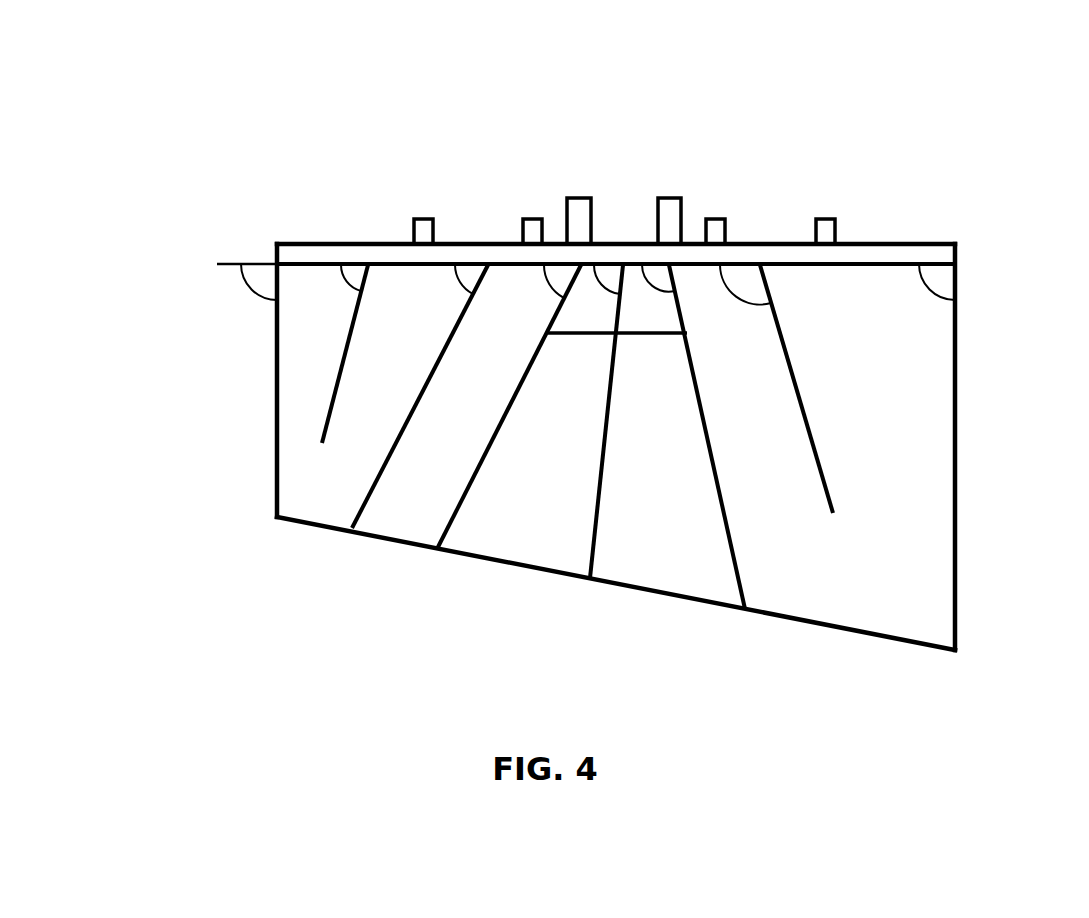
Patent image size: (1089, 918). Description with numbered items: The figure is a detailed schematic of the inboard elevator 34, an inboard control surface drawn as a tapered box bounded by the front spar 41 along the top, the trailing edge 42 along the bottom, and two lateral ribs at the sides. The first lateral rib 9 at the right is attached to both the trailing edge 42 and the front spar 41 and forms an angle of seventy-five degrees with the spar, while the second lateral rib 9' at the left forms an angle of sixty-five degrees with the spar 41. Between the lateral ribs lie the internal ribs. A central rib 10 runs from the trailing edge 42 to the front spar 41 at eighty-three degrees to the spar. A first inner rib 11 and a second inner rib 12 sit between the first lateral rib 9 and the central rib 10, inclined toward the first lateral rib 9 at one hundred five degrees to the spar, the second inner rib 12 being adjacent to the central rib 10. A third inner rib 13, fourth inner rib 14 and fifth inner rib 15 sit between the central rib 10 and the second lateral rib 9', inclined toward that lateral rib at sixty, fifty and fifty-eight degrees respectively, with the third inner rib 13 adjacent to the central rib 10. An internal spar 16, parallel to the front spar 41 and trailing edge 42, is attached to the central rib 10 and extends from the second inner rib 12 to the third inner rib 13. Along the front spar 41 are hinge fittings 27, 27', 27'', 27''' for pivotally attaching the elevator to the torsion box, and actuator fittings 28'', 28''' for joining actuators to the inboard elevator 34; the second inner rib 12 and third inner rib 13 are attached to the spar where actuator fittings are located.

The inboard elevator 34 is at (220, 201).
The first lateral rib 9 is at (997, 447).
The second lateral rib 9' is at (182, 380).
The front spar 41 is at (392, 264).
The trailing edge 42 is at (847, 638).
The fifth inner rib 15 is at (343, 383).
The fourth inner rib 14 is at (392, 450).
The third inner rib 13 is at (453, 513).
The internal spar 16 is at (600, 333).
The central rib 10 is at (597, 525).
The second inner rib 12 is at (733, 562).
The first inner rib 11 is at (825, 470).
The hinge fitting 27 is at (856, 183).
The hinge fitting 27' is at (743, 183).
The hinge fitting 27'' is at (490, 178).
The hinge fitting 27''' is at (381, 181).
The actuator fitting 28'' is at (556, 165).
The actuator fitting 28''' is at (642, 157).